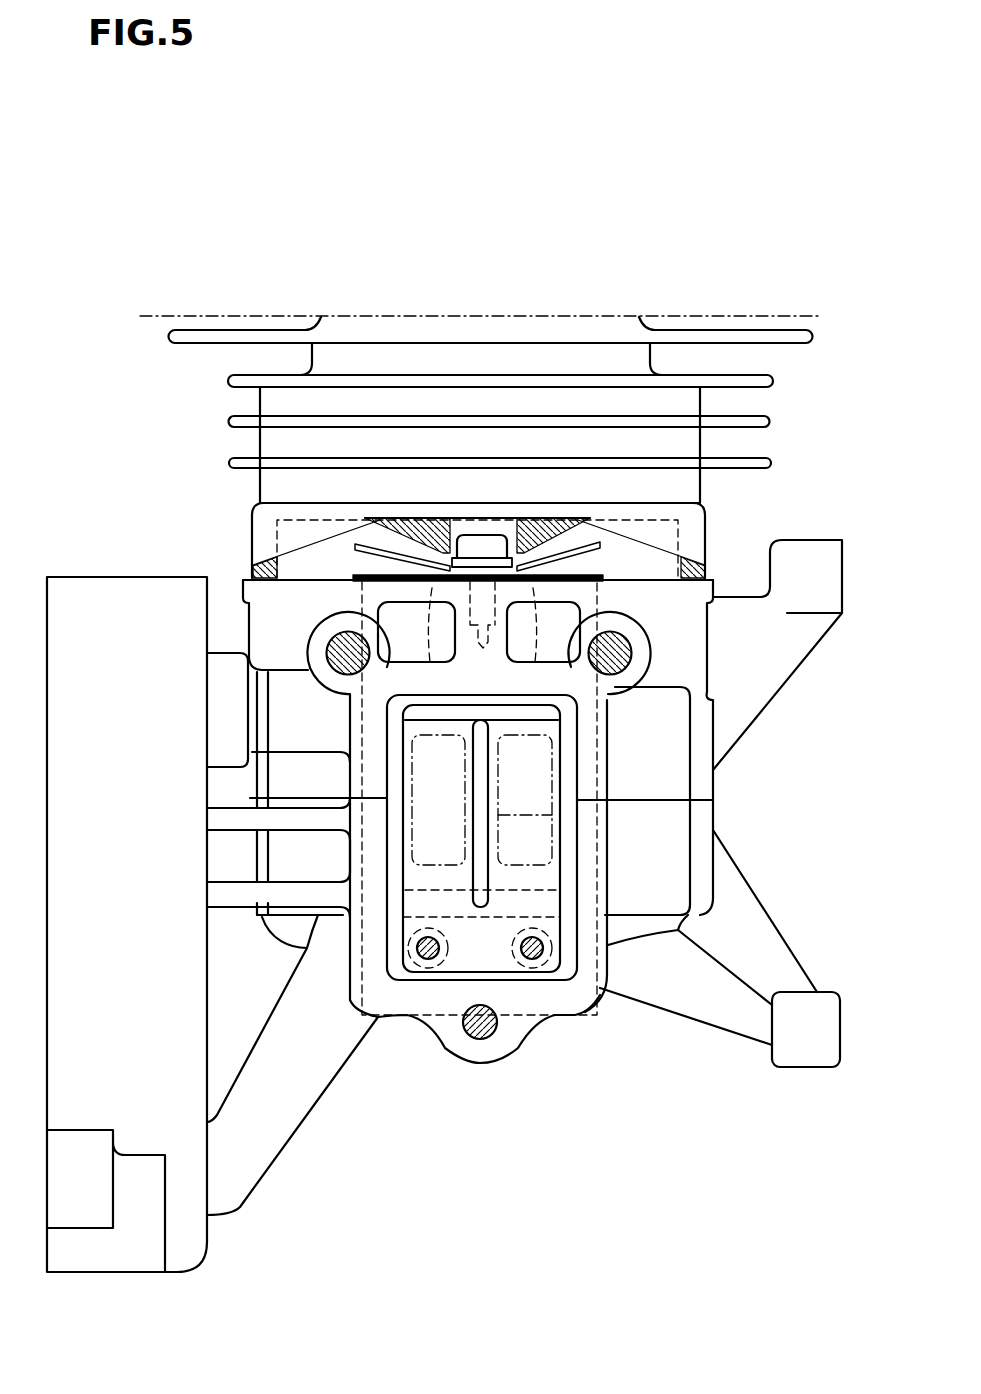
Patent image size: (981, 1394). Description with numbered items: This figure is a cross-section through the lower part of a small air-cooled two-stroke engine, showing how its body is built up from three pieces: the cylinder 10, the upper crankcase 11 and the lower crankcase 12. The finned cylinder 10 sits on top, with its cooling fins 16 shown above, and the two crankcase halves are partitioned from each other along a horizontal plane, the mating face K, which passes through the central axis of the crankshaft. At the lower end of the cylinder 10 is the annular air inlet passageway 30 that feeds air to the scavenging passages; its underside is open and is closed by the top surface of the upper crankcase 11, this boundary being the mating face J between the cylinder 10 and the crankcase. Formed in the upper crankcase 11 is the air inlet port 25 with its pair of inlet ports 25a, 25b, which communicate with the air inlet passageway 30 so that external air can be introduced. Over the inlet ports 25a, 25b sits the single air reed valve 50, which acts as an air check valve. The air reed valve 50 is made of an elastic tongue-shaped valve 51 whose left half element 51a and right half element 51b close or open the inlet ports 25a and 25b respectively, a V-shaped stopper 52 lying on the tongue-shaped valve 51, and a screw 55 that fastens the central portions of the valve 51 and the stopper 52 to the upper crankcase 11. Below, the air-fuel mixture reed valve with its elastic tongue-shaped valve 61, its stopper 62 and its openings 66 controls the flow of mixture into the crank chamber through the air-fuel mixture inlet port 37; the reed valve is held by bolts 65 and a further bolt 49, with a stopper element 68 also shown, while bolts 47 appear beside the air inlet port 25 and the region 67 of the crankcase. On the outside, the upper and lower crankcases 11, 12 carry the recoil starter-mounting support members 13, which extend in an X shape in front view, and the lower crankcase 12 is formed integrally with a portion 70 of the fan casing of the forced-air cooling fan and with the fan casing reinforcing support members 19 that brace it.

The cylinder 10 is at (262, 442).
The cooling fins 16 is at (772, 421).
The annular air inlet passageway 30 is at (660, 562).
The mating face J is at (702, 560).
The screw 55 is at (480, 546).
The V-shaped stopper 52 is at (540, 520).
The left half element 51a is at (371, 547).
The right half element 51b is at (600, 545).
The elastic tongue-shaped valve 51 is at (346, 584).
The air reed valve 50 is at (602, 560).
The air inlet port 25 is at (403, 672).
The crankcase portion 67 is at (296, 731).
The inlet port 25a is at (419, 641).
The inlet port 25b is at (543, 641).
The fastening bolt 47 is at (330, 650).
The stopper 62 is at (560, 722).
The elastic tongue-shaped valve 61 is at (540, 852).
The openings 66 is at (545, 750).
The reed stopper 68 is at (545, 815).
The reed valve bolts 65 is at (536, 960).
The bolt 49 is at (483, 1040).
The air-fuel mixture inlet port 37 is at (393, 846).
The mating face K is at (705, 803).
The upper crankcase 11 is at (680, 725).
The lower crankcase 12 is at (678, 851).
The recoil starter-mounting support members 13 is at (772, 677).
The fan casing reinforcing support members 19 is at (292, 1100).
The portion of the fan casing 70 is at (193, 1243).